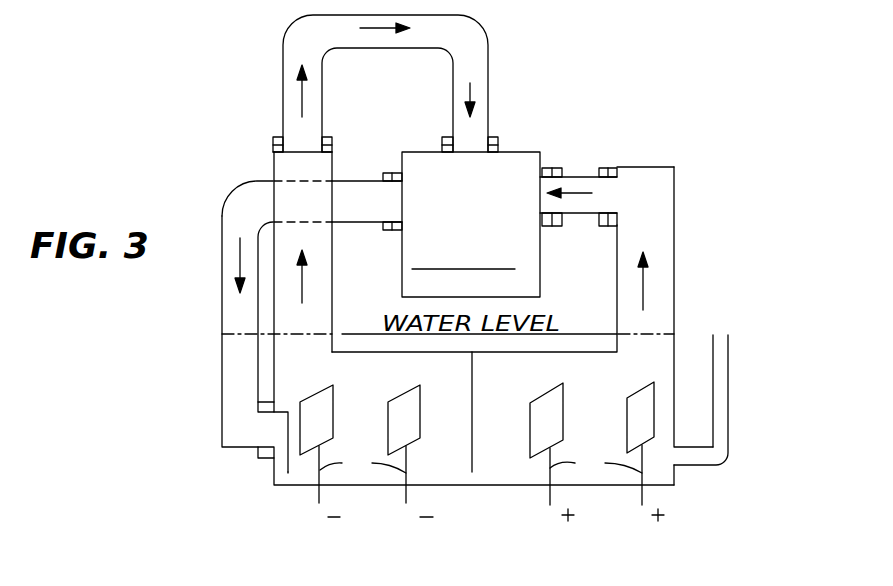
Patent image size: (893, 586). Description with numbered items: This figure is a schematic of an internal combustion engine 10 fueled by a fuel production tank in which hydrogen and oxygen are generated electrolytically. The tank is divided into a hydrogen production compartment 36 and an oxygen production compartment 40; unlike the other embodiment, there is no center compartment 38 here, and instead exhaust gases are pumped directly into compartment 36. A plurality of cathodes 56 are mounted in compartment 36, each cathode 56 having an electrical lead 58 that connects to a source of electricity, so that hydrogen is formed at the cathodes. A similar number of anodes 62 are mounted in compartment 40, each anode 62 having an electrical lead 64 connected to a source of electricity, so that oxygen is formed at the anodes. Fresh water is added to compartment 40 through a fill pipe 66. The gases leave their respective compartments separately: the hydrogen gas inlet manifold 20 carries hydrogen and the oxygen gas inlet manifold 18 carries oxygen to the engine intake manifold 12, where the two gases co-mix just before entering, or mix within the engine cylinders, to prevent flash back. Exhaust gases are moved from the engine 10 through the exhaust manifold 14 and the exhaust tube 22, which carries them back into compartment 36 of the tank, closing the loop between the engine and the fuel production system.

The internal combustion engine 10 is at (477, 505).
The intake manifold 12 is at (488, 80).
The exhaust manifold 14 is at (348, 178).
The oxygen gas inlet manifold 18 is at (575, 176).
The hydrogen gas inlet manifold 20 is at (283, 90).
The exhaust tube 22 is at (222, 310).
The hydrogen production compartment 36 is at (296, 468).
The center compartment 38 is at (512, 470).
The oxygen production compartment 40 is at (593, 475).
The cathode 56 is at (333, 405).
The electrical lead 58 is at (363, 462).
The anode 62 is at (565, 408).
The electrical lead 64 is at (596, 465).
The fill pipe 66 is at (728, 385).